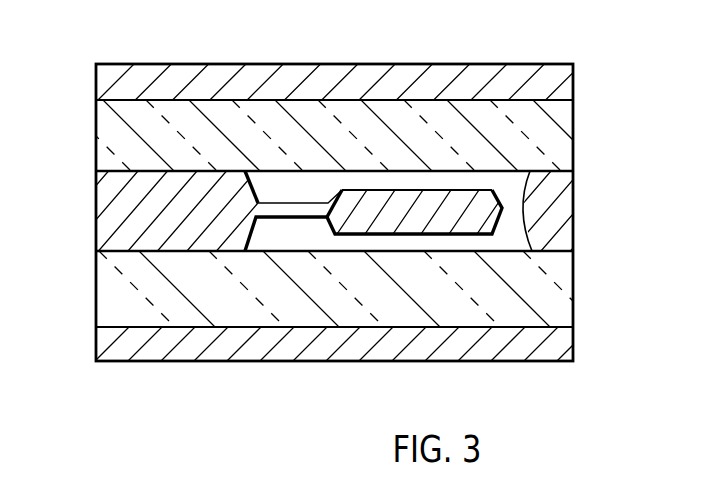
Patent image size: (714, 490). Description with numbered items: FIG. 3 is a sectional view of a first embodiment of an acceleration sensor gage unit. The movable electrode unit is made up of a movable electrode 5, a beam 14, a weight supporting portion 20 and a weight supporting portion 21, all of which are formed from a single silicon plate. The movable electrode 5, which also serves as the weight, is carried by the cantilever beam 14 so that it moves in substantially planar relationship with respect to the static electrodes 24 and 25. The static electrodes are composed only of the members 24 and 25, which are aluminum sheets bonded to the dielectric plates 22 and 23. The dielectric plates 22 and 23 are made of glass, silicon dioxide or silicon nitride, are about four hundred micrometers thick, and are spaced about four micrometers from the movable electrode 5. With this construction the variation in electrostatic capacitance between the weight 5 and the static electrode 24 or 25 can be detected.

The weight supporting portion 20 is at (112, 218).
The static electrode 24 is at (325, 65).
The dielectric plate 22 is at (558, 120).
The weight supporting portion 21 is at (562, 203).
The movable electrode 5 is at (480, 203).
The beam 14 is at (277, 202).
The dielectric plate 23 is at (562, 286).
The static electrode 25 is at (325, 352).